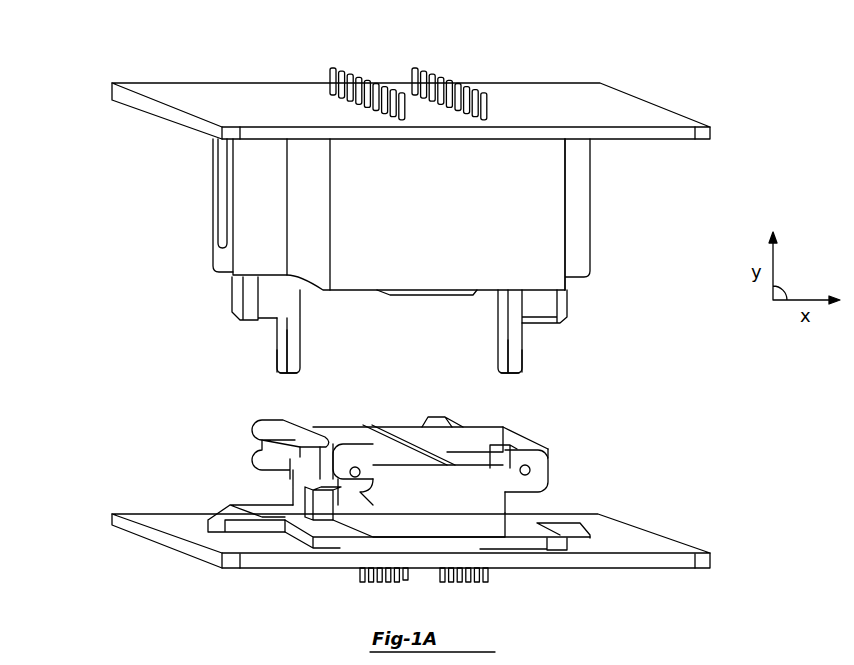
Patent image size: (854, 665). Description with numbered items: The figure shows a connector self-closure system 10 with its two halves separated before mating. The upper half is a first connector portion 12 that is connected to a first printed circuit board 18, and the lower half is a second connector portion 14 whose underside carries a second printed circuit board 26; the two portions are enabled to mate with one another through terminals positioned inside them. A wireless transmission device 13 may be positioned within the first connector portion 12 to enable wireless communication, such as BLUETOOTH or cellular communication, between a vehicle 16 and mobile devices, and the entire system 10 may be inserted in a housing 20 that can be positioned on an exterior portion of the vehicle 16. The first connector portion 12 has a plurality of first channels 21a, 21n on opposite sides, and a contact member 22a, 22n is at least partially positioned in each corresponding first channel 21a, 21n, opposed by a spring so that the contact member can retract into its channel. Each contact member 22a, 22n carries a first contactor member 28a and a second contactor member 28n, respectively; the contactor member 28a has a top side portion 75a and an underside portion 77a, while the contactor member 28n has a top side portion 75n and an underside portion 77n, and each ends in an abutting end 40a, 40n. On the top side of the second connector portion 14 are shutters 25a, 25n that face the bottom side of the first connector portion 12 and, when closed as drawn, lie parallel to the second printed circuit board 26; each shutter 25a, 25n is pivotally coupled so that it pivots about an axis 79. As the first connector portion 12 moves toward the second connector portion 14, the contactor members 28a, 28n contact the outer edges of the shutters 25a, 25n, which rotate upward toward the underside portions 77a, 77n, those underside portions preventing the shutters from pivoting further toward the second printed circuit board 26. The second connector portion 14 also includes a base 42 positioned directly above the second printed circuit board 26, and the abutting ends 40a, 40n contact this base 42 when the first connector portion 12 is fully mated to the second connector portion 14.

The connector self-closure system 10 is at (672, 60).
The first connector portion 12 is at (590, 186).
The wireless transmission device 13 is at (457, 226).
The second connector portion 14 is at (492, 503).
The vehicle 16 is at (61, 32).
The first printed circuit board 18 is at (520, 95).
The housing 20 is at (371, 32).
The first channel 21a is at (216, 200).
The first channel 21n is at (580, 228).
The contact member 22a is at (238, 290).
The contact member 22n is at (562, 305).
The shutter 25a is at (285, 435).
The shutter 25n is at (510, 437).
The second printed circuit board 26 is at (660, 545).
The first contactor member 28a is at (287, 343).
The second contactor member 28n is at (515, 357).
The abutting end 40a is at (278, 374).
The abutting end 40n is at (515, 375).
The base 42 is at (228, 517).
The top side portion 75a is at (275, 355).
The top side portion 75n is at (524, 365).
The underside portion 77a is at (300, 344).
The underside portion 77n is at (505, 343).
The axis 79 is at (356, 474).